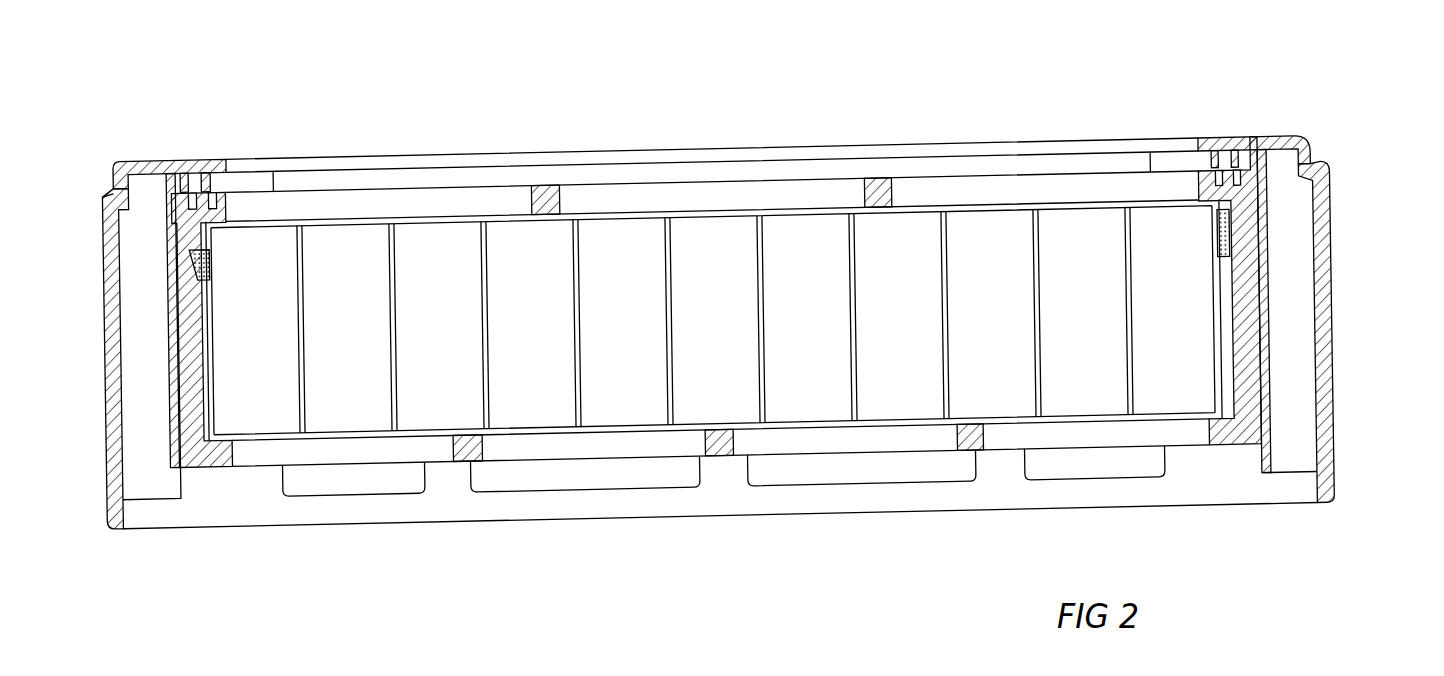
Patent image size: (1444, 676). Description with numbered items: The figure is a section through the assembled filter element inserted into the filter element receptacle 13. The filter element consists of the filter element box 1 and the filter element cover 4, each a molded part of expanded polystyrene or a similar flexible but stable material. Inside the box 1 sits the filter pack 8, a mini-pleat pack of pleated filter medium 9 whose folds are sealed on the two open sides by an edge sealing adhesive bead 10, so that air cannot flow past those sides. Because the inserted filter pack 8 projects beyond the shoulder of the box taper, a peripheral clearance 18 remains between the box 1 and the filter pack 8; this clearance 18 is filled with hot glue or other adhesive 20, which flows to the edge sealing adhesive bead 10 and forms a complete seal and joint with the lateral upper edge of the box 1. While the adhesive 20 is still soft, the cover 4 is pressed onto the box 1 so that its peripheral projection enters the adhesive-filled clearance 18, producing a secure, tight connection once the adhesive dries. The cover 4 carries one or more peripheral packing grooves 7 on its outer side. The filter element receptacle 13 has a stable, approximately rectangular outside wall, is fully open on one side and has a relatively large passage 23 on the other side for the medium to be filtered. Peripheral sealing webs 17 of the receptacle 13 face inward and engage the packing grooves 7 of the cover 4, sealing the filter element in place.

The filter element box 1 is at (205, 453).
The filter element cover 4 is at (229, 218).
The packing grooves 7 is at (1200, 166).
The filter pack 8 is at (465, 221).
The pleated filter medium 9 is at (348, 250).
The edge sealing adhesive bead 10 is at (1220, 378).
The filter element receptacle 13 is at (1332, 447).
The sealing webs 17 is at (1237, 140).
The peripheral clearance 18 is at (185, 252).
The adhesive 20 is at (1240, 246).
The passage 23 is at (726, 152).